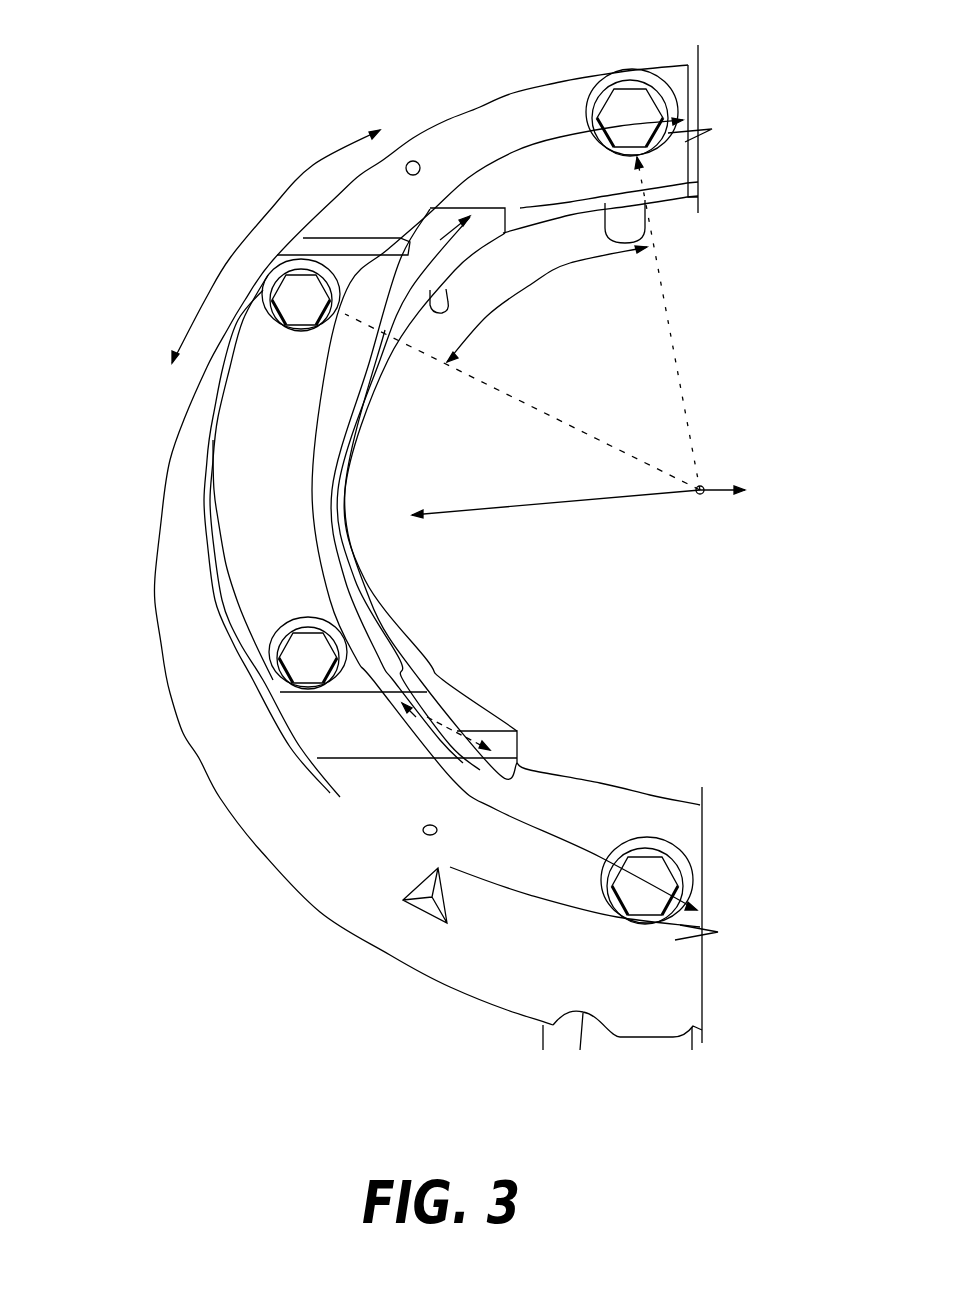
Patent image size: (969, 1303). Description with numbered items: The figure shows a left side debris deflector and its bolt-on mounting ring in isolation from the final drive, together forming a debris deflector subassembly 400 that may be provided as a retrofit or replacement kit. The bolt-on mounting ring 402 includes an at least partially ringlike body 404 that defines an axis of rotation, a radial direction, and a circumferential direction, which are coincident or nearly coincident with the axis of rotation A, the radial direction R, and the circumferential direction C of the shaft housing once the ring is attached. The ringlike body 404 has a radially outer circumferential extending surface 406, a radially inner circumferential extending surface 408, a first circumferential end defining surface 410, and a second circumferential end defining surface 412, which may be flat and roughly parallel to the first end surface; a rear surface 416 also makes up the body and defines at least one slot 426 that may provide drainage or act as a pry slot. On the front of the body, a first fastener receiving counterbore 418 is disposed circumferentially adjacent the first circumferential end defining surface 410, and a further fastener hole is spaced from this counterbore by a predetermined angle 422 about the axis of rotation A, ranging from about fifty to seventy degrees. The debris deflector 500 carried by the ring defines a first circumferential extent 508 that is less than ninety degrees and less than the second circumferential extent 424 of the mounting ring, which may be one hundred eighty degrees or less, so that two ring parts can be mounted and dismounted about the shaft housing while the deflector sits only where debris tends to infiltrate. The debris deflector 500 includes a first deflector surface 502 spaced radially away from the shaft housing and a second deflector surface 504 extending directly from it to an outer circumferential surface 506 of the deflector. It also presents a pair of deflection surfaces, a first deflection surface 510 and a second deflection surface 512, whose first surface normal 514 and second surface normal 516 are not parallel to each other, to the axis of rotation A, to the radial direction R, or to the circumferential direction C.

The debris deflector subassembly 400 is at (507, 1015).
The bolt-on mounting ring 402 is at (578, 787).
The at least partially ringlike body 404 is at (600, 827).
The outer circumferential extending surface 406 is at (390, 927).
The inner circumferential extending surface 408 is at (562, 220).
The first circumferential end defining surface 410 is at (672, 137).
The second circumferential end defining surface 412 is at (702, 883).
The rear surface 416 is at (543, 1050).
The first fastener receiving counterbore 418 is at (638, 157).
The predetermined angle 422 is at (492, 320).
The second circumferential extent 424 is at (510, 158).
The slot 426 is at (581, 1050).
The debris deflector 500 is at (293, 487).
The first deflector surface 502 is at (510, 748).
The second deflector surface 504 is at (346, 750).
The outer circumferential surface 506 is at (278, 700).
The first circumferential extent 508 is at (345, 472).
The first deflection surface 510 is at (427, 692).
The second deflection surface 512 is at (330, 708).
The first surface normal 514 is at (500, 768).
The second surface normal 516 is at (370, 705).
The axis of rotation A is at (701, 494).
The radial direction R is at (523, 505).
The circumferential direction C is at (318, 172).